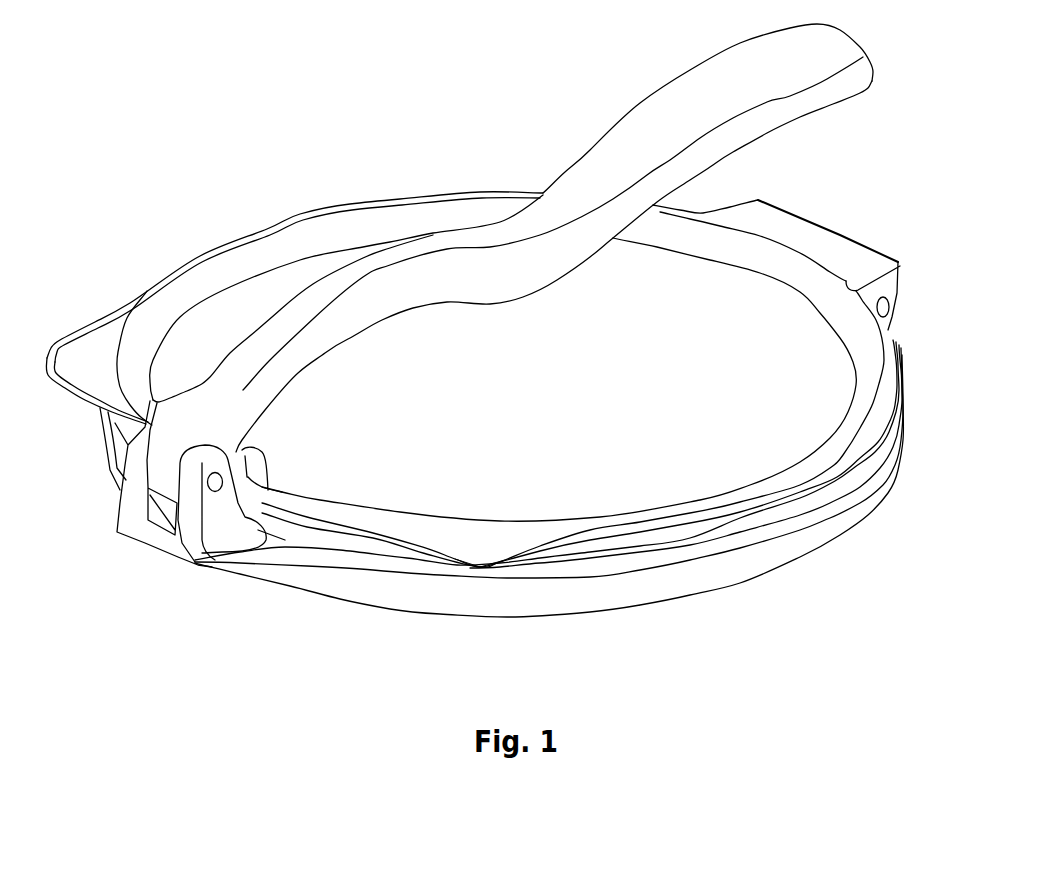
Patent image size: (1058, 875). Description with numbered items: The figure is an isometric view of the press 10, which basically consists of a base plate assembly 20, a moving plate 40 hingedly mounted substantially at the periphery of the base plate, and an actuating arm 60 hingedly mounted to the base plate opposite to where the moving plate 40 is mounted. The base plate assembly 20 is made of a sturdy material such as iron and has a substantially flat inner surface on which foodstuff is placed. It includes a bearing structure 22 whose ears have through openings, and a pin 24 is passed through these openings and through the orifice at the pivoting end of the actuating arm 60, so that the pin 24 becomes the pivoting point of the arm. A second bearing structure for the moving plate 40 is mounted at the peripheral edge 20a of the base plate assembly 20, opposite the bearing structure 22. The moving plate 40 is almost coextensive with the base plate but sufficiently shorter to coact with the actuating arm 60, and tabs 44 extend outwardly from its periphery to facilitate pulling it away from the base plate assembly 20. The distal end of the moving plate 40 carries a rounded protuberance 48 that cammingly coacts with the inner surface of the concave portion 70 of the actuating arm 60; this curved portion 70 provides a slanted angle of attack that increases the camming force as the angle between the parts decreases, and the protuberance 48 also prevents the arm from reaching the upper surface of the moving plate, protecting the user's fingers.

The press 10 is at (343, 150).
The base plate assembly 20 is at (398, 611).
The peripheral edge 20a is at (755, 563).
The bearing structure 22 is at (133, 500).
The pin 24 is at (215, 492).
The moving plate 40 is at (240, 241).
The tabs 44 is at (495, 538).
The protuberance 48 is at (258, 475).
The actuating arm 60 is at (690, 68).
The concave portion 70 is at (397, 319).